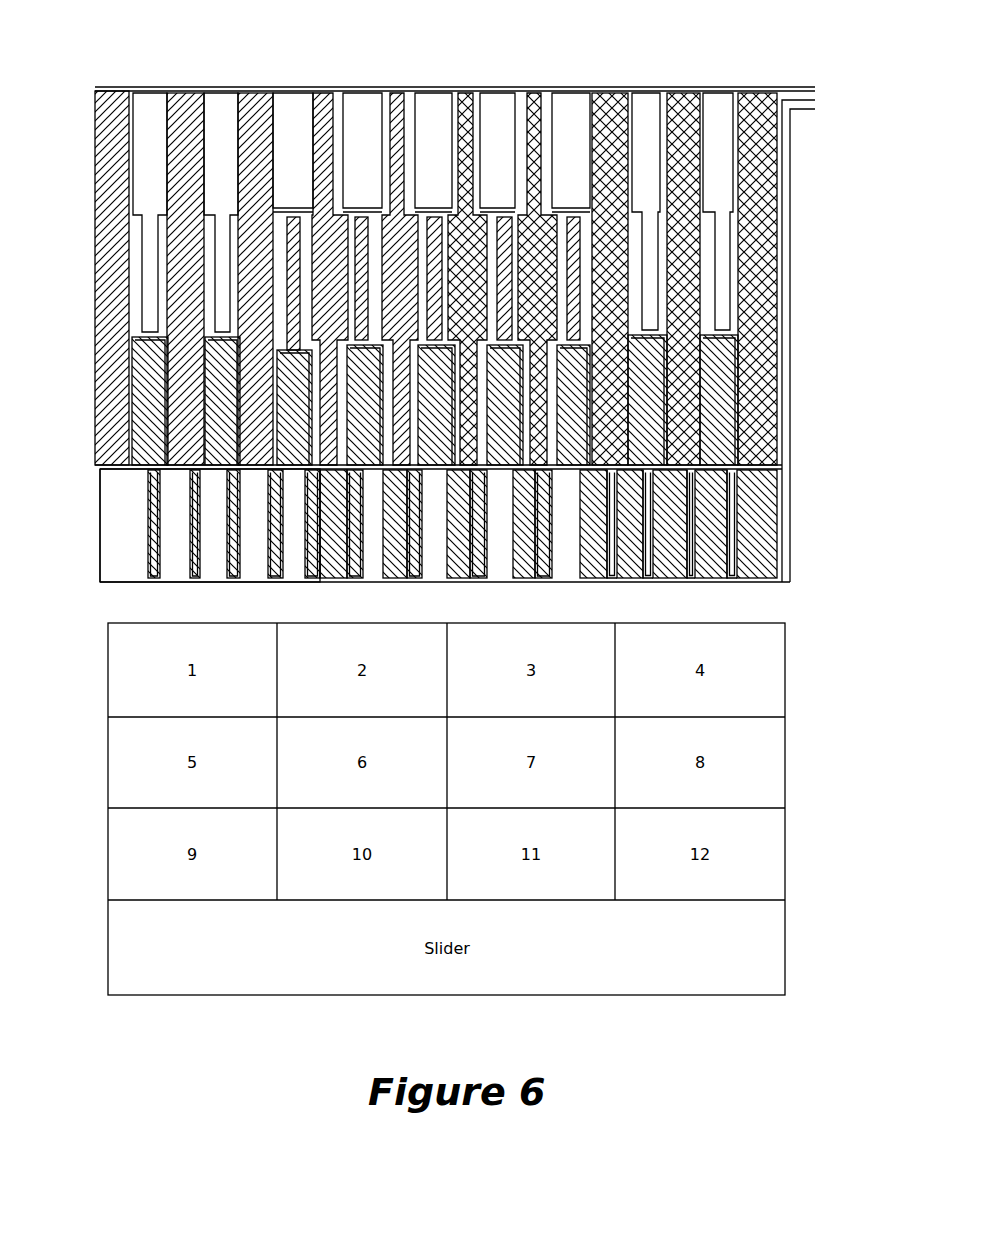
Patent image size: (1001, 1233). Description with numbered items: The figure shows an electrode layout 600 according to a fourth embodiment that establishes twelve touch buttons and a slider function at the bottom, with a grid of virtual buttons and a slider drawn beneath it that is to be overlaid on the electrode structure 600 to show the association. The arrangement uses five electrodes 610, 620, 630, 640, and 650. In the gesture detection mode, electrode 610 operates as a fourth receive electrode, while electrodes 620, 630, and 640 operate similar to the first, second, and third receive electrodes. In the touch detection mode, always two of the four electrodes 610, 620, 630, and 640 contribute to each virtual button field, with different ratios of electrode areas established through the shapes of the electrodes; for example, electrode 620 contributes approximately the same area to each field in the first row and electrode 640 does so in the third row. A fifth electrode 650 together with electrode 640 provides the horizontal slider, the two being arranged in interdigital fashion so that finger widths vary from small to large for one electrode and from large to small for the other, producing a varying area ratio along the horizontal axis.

The electrode layout 600 is at (355, 52).
The electrode 610 is at (97, 127).
The electrode 620 is at (215, 100).
The electrode 630 is at (660, 88).
The electrode 640 is at (775, 537).
The fifth electrode 650 is at (115, 532).